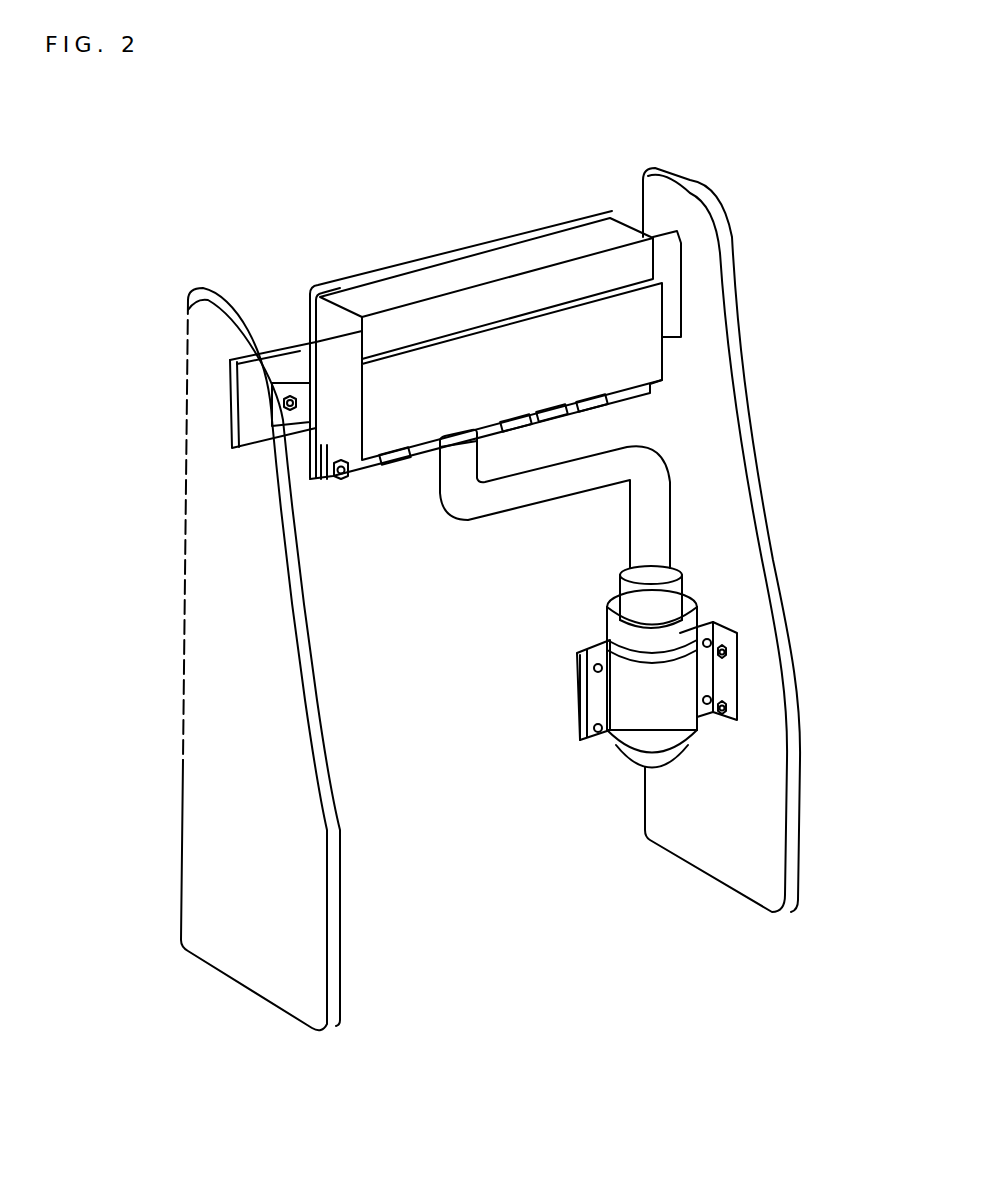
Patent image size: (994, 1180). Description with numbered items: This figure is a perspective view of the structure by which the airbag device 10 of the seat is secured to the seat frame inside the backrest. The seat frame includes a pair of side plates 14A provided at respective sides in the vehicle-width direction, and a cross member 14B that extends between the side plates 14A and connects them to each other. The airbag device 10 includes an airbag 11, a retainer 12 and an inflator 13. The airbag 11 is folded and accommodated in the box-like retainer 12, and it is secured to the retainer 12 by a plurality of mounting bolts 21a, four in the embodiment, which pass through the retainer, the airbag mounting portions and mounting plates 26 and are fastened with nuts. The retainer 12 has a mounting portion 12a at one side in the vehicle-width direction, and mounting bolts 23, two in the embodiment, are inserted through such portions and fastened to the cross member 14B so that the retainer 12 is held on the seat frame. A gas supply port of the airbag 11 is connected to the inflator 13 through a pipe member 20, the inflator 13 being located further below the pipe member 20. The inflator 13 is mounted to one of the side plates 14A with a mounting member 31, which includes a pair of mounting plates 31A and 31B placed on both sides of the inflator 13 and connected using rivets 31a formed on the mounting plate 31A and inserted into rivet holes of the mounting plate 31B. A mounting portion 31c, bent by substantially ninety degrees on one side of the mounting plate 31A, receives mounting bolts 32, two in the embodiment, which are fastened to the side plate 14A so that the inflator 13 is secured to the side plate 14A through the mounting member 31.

The airbag device 10 is at (523, 852).
The airbag 11 is at (473, 278).
The retainer 12 is at (633, 366).
The mounting portion 12a is at (308, 434).
The inflator 13 is at (678, 658).
The side plate 14A is at (182, 872).
The cross member 14B is at (277, 380).
The pipe member 20 is at (497, 512).
The mounting bolts 21a is at (398, 462).
The mounting bolts 23 is at (297, 403).
The mounting plates 26 is at (328, 480).
The mounting member 31 is at (652, 701).
The mounting plate 31A is at (578, 679).
The mounting plate 31B is at (600, 706).
The rivets 31a is at (599, 663).
The mounting portion 31c is at (718, 722).
The mounting bolts 32 is at (738, 643).